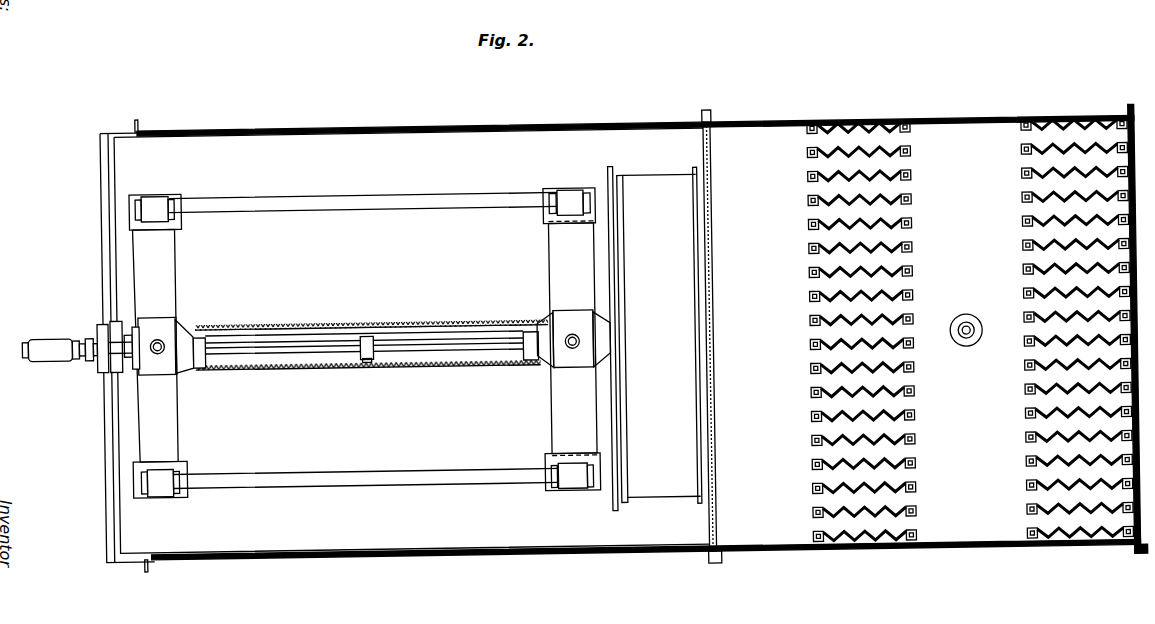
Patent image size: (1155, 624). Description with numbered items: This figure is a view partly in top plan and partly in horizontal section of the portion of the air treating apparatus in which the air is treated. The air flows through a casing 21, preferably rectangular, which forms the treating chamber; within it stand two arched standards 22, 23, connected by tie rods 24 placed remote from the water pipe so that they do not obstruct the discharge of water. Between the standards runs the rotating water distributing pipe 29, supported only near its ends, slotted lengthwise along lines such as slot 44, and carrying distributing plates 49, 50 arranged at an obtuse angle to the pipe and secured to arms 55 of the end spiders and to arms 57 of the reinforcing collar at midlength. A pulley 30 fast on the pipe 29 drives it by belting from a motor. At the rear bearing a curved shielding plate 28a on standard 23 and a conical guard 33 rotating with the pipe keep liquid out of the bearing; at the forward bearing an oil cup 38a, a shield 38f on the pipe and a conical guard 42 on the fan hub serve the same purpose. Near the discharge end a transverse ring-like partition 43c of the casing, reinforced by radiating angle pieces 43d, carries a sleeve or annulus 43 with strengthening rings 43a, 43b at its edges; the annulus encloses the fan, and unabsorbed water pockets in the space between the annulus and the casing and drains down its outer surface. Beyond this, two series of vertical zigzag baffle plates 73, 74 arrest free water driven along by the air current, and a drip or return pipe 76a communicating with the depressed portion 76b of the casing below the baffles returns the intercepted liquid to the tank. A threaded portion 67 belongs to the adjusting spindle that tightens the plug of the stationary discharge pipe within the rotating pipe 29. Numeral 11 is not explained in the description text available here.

The base plate 11 is at (150, 180).
The casing 21 is at (371, 131).
The standard 22 is at (556, 413).
The standard 23 is at (164, 412).
The tie rods 24 is at (348, 200).
The curved shielding plate 28a is at (155, 340).
The water distributing tube or pipe 29 is at (394, 346).
The pulley 30 is at (99, 325).
The guard 33 is at (190, 328).
The oil cup 38a is at (571, 330).
The shield 38f is at (546, 318).
The conical guard 42 is at (602, 325).
The sleeve or annulus 43 is at (650, 178).
The strengthening ring 43a is at (621, 256).
The strengthening ring 43b is at (696, 213).
The transverse partition 43c is at (712, 150).
The radiating angle pieces 43d is at (703, 117).
The longitudinal slot 44 is at (268, 341).
The distributing plate 49 is at (315, 336).
The distributing plate 50 is at (327, 366).
The arms 55 is at (203, 356).
The arms 57 is at (364, 366).
The threaded portion 67 is at (22, 339).
The baffle plates 73 is at (895, 177).
The baffle plates 74 is at (1040, 250).
The drip or return pipe 76a is at (966, 347).
The depressed portion 76b is at (973, 128).